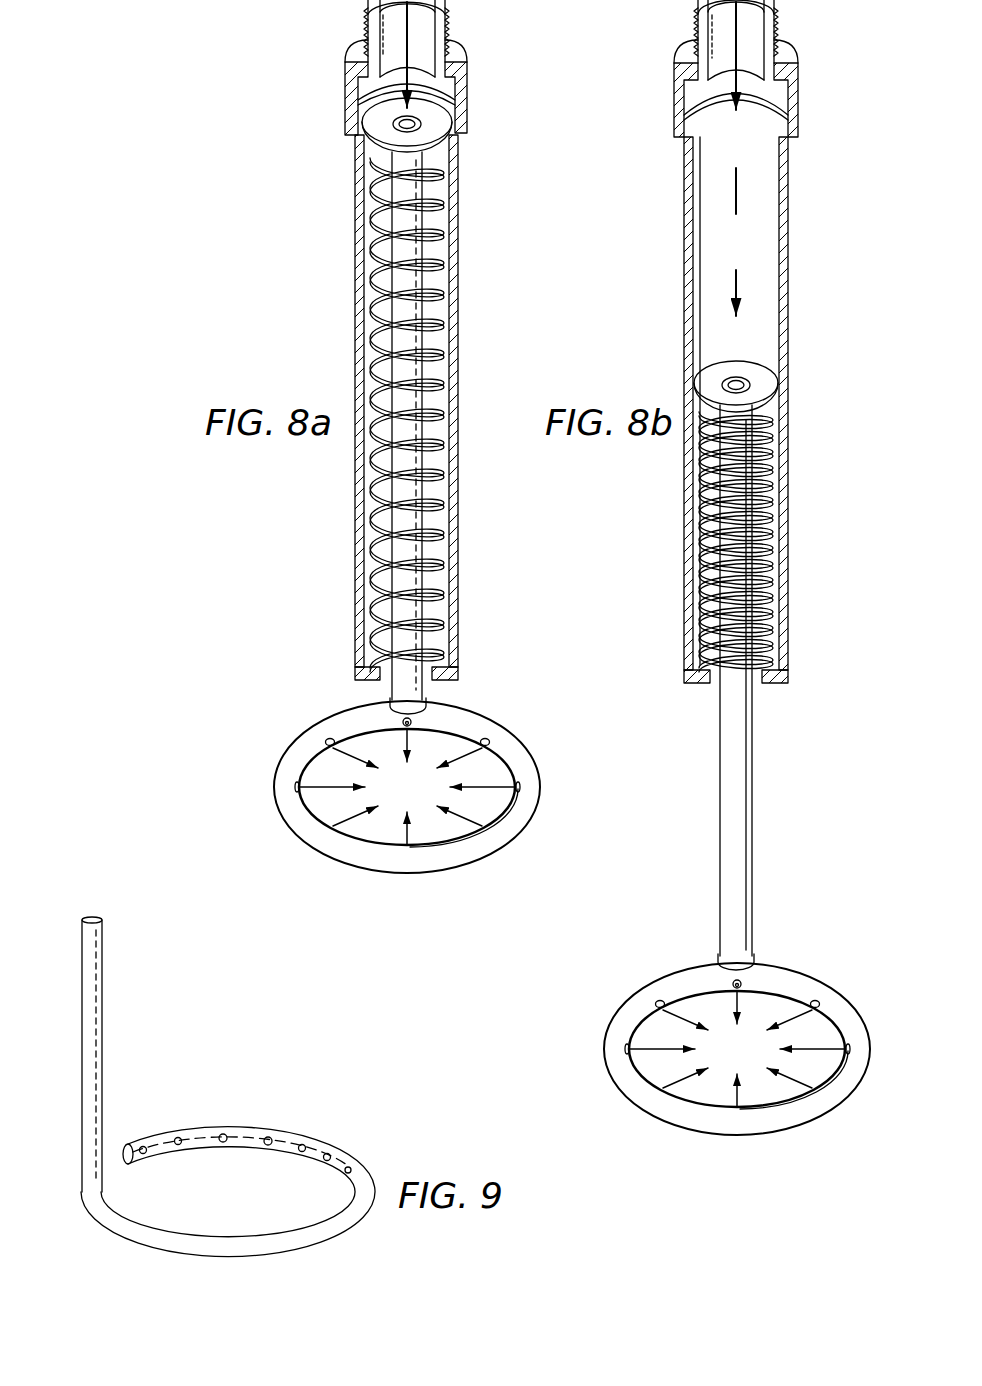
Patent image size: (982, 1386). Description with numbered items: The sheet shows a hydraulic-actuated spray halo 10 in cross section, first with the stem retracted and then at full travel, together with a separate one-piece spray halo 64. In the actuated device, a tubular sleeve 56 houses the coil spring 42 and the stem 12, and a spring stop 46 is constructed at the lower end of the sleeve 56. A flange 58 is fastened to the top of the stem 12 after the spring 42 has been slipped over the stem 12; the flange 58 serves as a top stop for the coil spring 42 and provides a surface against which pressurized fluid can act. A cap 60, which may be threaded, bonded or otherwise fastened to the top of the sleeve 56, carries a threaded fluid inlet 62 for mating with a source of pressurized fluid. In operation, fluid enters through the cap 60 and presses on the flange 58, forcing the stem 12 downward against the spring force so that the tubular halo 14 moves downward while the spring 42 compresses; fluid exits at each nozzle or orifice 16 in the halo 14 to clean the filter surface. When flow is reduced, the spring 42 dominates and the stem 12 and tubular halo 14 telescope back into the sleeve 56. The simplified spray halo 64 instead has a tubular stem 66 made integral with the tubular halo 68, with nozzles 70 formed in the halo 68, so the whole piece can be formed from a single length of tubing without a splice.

In FIG. 8a, the spray halo 10 is at (550, 740).
In FIG. 8b, the spray halo 10 is at (822, 810).
In FIG. 8a, the stem 12 is at (423, 585).
In FIG. 8b, the stem 12 is at (721, 848).
In FIG. 8a, the tubular halo 14 is at (297, 812).
In FIG. 8b, the tubular halo 14 is at (627, 1078).
In FIG. 8a, the nozzle or orifice 16 is at (485, 741).
In FIG. 8b, the nozzle or orifice 16 is at (815, 1000).
In FIG. 8a, the coil spring 42 is at (376, 220).
In FIG. 8b, the coil spring 42 is at (700, 505).
In FIG. 8a, the spring stop 46 is at (360, 678).
In FIG. 8b, the spring stop 46 is at (698, 686).
In FIG. 8a, the tubular sleeve 56 is at (356, 345).
In FIG. 8b, the tubular sleeve 56 is at (684, 290).
In FIG. 8a, the flange 58 is at (432, 104).
In FIG. 8b, the flange 58 is at (738, 372).
In FIG. 8a, the cap 60 is at (346, 101).
In FIG. 8b, the cap 60 is at (674, 103).
In FIG. 8a, the fluid inlet 62 is at (370, 35).
In FIG. 8b, the fluid inlet 62 is at (699, 35).
In FIG. 9, the spray halo 64 is at (243, 1014).
In FIG. 9, the tubular stem 66 is at (102, 988).
In FIG. 9, the tubular halo 68 is at (323, 1140).
In FIG. 9, the nozzles 70 is at (266, 1136).